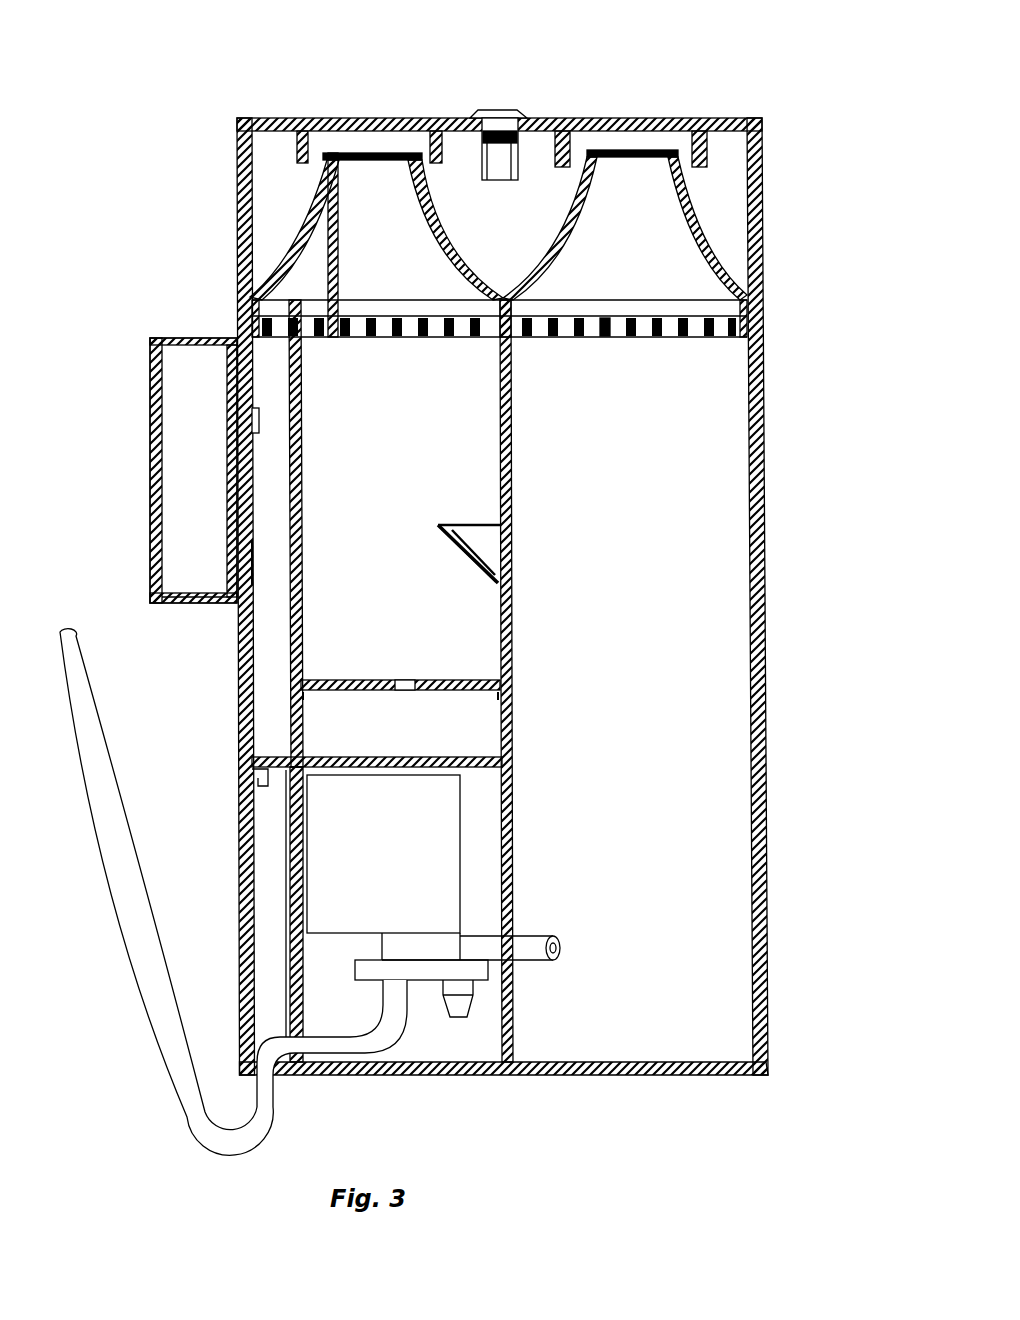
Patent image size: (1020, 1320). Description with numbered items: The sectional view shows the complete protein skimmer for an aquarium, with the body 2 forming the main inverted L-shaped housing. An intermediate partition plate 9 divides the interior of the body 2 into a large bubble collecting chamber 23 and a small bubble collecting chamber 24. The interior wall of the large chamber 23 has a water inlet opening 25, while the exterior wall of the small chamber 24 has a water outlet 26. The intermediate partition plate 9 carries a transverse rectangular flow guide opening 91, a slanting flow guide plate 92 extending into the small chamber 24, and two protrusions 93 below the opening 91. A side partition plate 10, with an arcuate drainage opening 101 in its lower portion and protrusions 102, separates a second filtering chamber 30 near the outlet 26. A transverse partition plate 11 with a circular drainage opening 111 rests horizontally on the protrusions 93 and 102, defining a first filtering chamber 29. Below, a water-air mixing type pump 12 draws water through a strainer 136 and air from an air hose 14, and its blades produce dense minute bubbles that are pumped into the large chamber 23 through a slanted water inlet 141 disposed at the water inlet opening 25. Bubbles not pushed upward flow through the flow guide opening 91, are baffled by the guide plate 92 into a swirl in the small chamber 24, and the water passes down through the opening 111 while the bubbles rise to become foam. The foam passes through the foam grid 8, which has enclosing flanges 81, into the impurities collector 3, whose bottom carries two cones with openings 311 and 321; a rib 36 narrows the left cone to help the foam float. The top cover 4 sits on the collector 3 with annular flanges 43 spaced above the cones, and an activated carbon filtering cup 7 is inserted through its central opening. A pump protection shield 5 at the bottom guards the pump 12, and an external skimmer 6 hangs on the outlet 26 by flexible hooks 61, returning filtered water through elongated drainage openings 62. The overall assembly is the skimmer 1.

The device 1 is at (212, 151).
The body 2 is at (777, 712).
The impurities collector 3 is at (772, 246).
The top cover 4 is at (704, 112).
The pump protection shield 5 is at (425, 1084).
The external skimmer 6 is at (144, 469).
The activated carbon filtering cup 7 is at (497, 110).
The foam grid 8 is at (622, 338).
The enclosing flanges 81 is at (670, 334).
The intermediate partition plate 9 is at (512, 403).
The side partition plate 10 is at (302, 496).
The arcuate drainage opening 101 is at (293, 731).
The protrusions 102 is at (305, 693).
The transverse partition plate 11 is at (343, 680).
The circular drainage opening 111 is at (407, 680).
The water-air mixing type pump 12 is at (448, 837).
The strainer 136 is at (457, 1017).
The air hose 14 is at (112, 795).
The water inlet 141 is at (538, 963).
The large bubble collecting chamber 23 is at (645, 687).
The small bubble collecting chamber 24 is at (430, 430).
The water inlet opening 25 is at (513, 934).
The water outlet 26 is at (232, 380).
The first filtering chamber 29 is at (408, 733).
The second filtering chamber 30 is at (278, 563).
The opening 311 is at (375, 170).
The opening 321 is at (642, 150).
The rib 36 is at (340, 274).
The annular flanges 43 is at (583, 118).
The hooks 61 is at (259, 425).
The elongated drainage openings 62 is at (200, 601).
The flow guide opening 91 is at (503, 540).
The flow guide plate 92 is at (470, 556).
The protrusions 93 is at (493, 692).